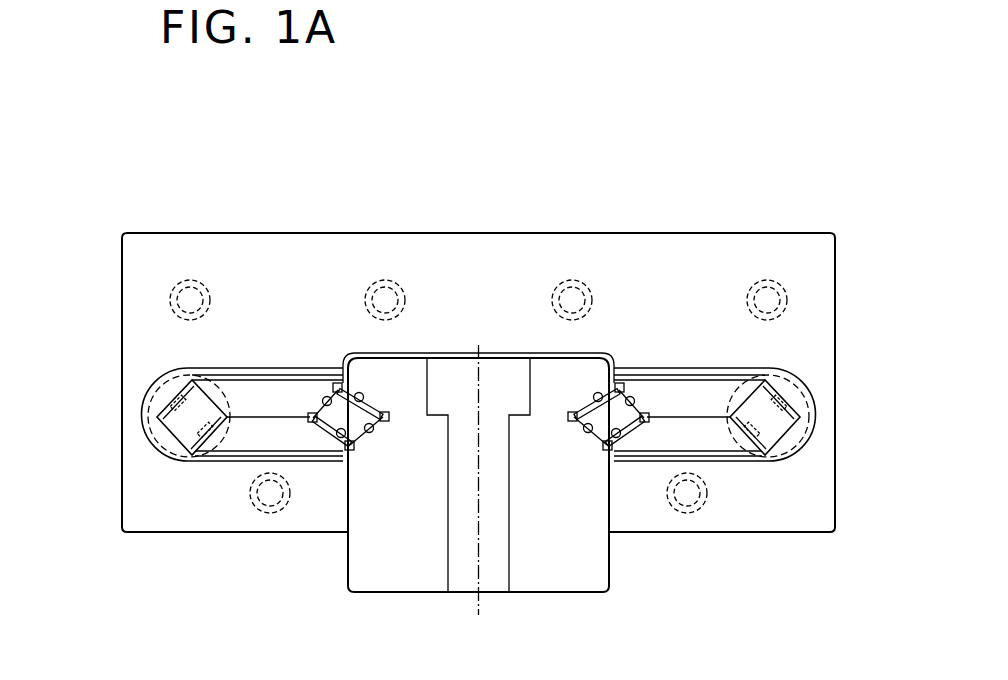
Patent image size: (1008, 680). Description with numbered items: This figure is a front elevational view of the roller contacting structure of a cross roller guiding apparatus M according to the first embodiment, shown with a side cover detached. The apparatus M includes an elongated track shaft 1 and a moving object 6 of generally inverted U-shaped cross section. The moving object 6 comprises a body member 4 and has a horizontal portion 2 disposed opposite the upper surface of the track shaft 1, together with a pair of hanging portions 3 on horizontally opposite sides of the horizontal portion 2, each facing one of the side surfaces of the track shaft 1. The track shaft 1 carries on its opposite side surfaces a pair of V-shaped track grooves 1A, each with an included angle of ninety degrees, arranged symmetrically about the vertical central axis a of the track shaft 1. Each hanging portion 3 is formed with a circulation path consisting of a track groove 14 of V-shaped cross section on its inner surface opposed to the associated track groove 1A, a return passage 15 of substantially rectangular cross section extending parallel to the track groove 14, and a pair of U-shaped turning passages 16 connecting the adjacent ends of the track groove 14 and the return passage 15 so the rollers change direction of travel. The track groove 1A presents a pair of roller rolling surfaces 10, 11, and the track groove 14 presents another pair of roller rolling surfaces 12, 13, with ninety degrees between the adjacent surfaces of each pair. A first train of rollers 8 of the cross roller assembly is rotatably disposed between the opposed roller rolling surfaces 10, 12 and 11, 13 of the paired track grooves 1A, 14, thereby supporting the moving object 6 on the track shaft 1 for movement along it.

The cross roller guiding apparatus M is at (360, 166).
The track shaft 1 is at (427, 577).
The track groove 1A is at (484, 389).
The horizontal portion 2 is at (257, 243).
The hanging portion 3 is at (128, 355).
The body member 4 is at (477, 247).
The moving object 6 is at (332, 230).
The first train of rollers 8 is at (165, 427).
The roller rolling surface 10 is at (343, 442).
The roller rolling surface 11 is at (355, 393).
The roller rolling surface 12 is at (334, 386).
The roller rolling surface 13 is at (338, 432).
The track groove 14 is at (330, 408).
The return passage 15 is at (165, 456).
The turning passage 16 is at (253, 415).
The center axis a is at (478, 472).